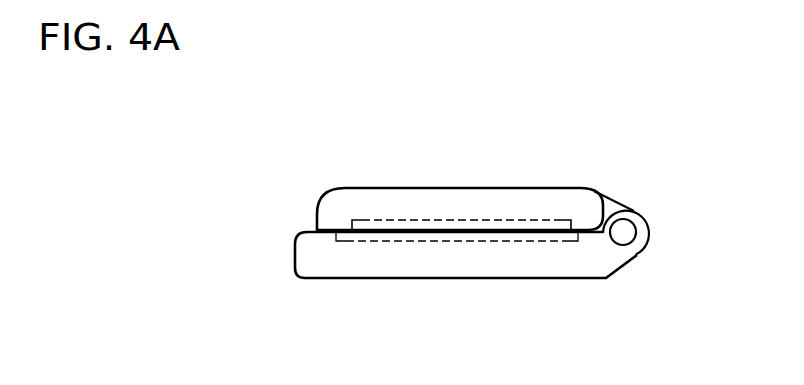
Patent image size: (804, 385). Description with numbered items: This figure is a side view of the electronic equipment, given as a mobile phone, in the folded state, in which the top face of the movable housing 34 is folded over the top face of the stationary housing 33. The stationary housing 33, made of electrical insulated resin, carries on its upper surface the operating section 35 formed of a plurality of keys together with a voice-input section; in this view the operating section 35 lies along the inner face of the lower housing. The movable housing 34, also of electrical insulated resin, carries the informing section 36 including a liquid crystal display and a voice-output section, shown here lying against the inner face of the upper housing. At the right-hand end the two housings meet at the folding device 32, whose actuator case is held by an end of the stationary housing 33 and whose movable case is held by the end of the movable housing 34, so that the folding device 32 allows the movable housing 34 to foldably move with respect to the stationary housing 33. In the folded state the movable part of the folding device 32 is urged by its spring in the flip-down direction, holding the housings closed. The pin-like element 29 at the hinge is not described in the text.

The hinge pin 29 is at (624, 224).
The folding device 32 is at (626, 236).
The stationary housing 33 is at (352, 265).
The movable housing 34 is at (437, 197).
The operating section 35 is at (437, 238).
The informing section 36 is at (382, 222).